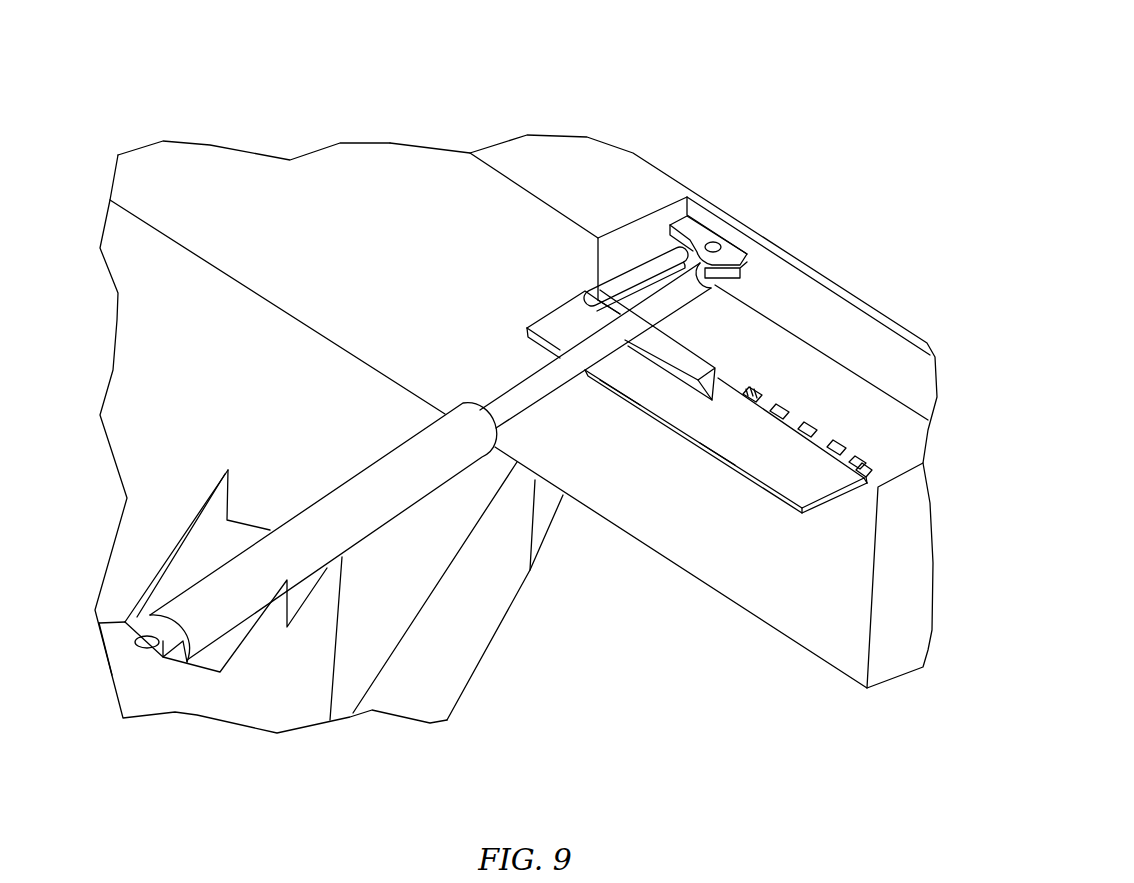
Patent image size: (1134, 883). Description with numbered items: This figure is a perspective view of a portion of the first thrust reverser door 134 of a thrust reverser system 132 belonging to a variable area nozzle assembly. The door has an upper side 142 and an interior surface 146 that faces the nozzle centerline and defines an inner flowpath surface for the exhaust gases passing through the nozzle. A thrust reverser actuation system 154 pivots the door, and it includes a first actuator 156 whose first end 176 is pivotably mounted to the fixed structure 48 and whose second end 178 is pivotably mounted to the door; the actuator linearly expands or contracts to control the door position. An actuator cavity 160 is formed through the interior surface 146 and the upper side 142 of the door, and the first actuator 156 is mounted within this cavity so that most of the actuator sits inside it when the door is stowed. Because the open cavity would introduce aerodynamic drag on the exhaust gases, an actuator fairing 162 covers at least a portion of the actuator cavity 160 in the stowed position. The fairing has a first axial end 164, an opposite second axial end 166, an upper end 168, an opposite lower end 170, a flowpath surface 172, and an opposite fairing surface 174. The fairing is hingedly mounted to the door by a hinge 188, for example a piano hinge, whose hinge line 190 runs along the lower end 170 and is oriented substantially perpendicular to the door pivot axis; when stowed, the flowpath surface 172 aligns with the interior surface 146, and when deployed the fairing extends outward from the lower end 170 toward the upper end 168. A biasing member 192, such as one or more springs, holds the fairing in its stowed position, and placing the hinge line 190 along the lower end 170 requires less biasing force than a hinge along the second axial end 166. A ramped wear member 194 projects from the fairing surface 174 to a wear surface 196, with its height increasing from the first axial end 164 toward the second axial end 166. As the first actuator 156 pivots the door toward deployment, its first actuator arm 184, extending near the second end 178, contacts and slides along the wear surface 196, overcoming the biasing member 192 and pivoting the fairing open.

The fixed structure 48 is at (160, 687).
The thrust reverser system 132 is at (783, 86).
The first thrust reverser door 134 is at (555, 145).
The upper side 142 is at (690, 175).
The interior surface 146 is at (352, 160).
The thrust reverser actuation system 154 is at (546, 655).
The first actuator 156 is at (320, 497).
The actuator cavity 160 is at (795, 306).
The actuator fairing 162 is at (780, 487).
The first axial end 164 is at (812, 492).
The second axial end 166 is at (553, 320).
The upper end 168 is at (735, 480).
The lower end 170 is at (856, 458).
The flowpath surface 172 is at (648, 430).
The fairing surface 174 is at (826, 438).
The first end 176 is at (132, 608).
The second end 178 is at (730, 246).
The first actuator arm 184 is at (637, 253).
The hinge 188 is at (870, 458).
The hinge line 190 is at (873, 478).
The biasing member 192 is at (752, 392).
The wear member 194 is at (640, 368).
The wear surface 196 is at (665, 350).